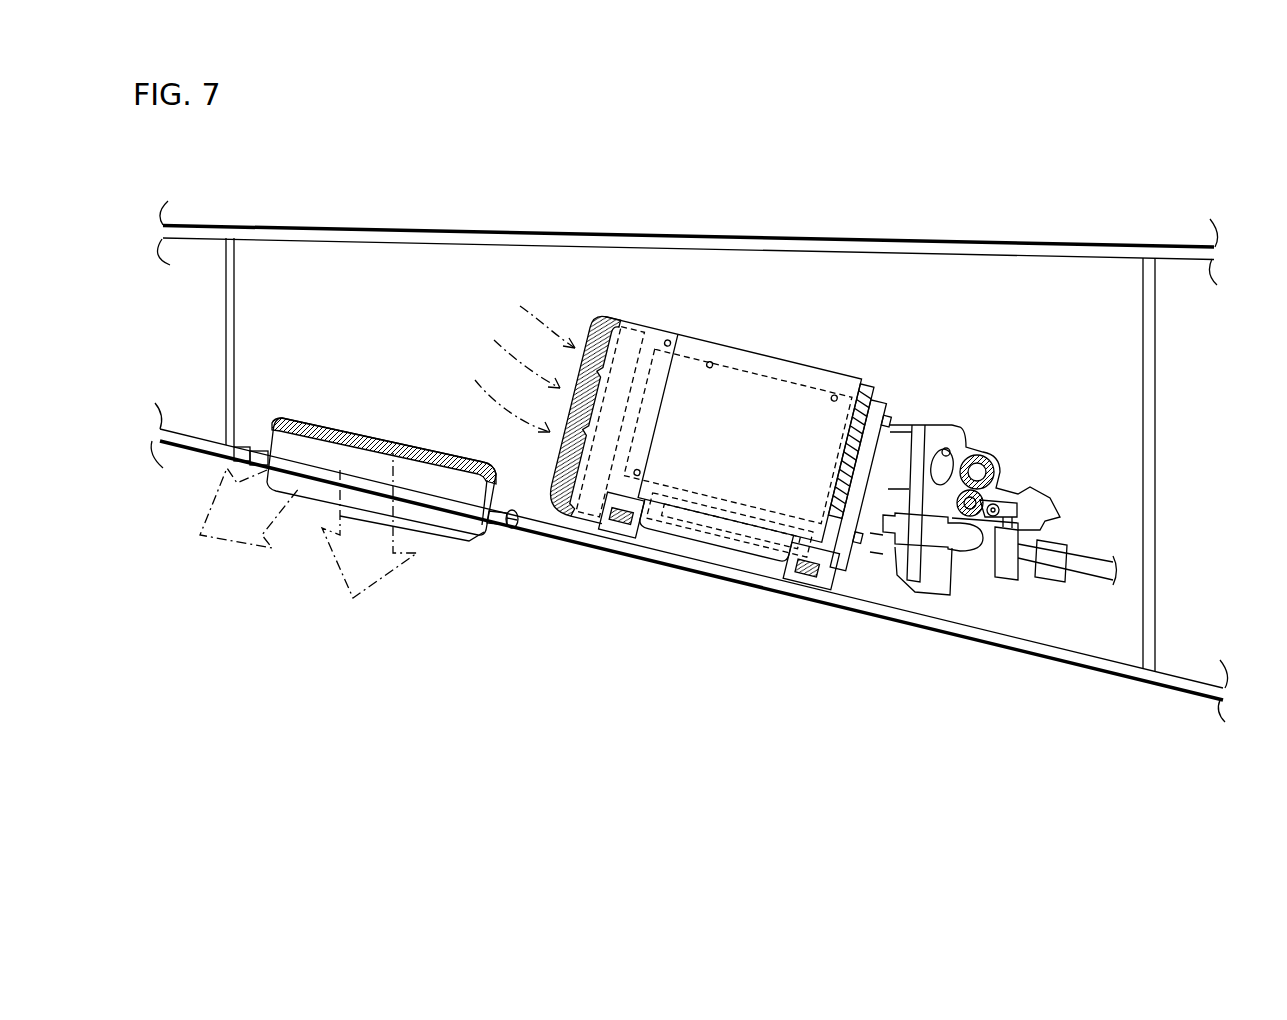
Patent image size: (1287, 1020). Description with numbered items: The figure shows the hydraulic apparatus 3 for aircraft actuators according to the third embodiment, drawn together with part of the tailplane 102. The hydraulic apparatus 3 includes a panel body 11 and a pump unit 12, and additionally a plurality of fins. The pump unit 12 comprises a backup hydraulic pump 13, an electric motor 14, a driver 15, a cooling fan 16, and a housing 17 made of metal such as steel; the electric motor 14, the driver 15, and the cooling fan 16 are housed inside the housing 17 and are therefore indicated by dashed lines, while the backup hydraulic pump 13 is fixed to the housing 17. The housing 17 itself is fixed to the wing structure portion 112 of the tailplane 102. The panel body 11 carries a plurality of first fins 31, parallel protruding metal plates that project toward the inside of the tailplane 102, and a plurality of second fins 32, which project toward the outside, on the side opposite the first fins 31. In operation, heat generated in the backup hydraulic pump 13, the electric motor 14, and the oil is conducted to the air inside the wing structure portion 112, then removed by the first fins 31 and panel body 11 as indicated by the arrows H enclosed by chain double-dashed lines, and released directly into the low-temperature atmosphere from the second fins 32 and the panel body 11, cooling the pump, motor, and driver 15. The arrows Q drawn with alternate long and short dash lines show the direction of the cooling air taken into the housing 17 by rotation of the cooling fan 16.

The hydraulic apparatus 3 is at (752, 431).
The panel body 11 is at (385, 496).
The pump unit 12 is at (877, 431).
The backup hydraulic pump 13 is at (928, 497).
The electric motor 14 is at (752, 358).
The driver 15 is at (662, 550).
The cooling fan 16 is at (632, 313).
The housing 17 is at (795, 372).
The first fins 31 is at (372, 440).
The second fins 32 is at (433, 528).
The tailplane 102 is at (689, 426).
The wing structure portion 112 is at (931, 239).
The arrows H is at (317, 503).
The arrows Q is at (516, 357).